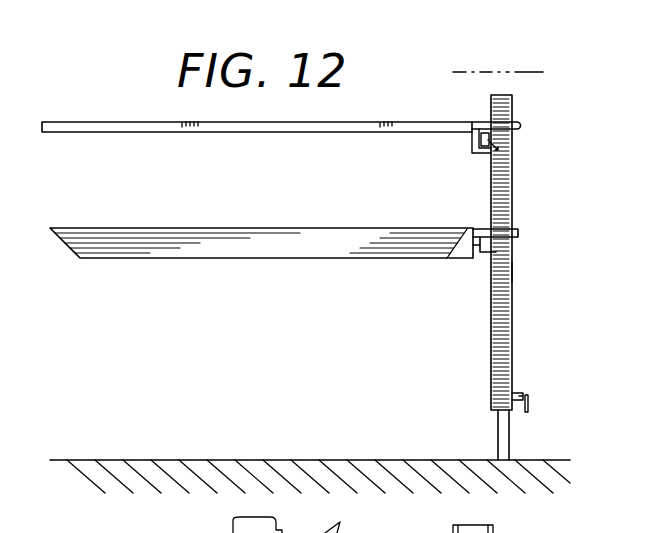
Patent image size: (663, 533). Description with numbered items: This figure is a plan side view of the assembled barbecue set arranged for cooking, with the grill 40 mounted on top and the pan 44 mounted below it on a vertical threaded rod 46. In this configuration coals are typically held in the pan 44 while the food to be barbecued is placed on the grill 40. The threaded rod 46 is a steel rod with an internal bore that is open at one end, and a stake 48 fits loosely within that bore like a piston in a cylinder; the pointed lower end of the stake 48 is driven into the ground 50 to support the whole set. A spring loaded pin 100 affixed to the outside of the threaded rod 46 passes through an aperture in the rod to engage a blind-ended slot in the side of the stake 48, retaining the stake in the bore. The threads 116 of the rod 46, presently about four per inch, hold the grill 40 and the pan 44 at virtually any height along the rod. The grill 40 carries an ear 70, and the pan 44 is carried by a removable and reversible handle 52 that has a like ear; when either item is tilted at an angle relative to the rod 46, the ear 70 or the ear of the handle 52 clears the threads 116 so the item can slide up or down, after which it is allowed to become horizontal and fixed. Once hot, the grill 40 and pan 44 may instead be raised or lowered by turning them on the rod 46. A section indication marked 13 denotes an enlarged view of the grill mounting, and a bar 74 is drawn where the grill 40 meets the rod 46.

The section line 13- 13 is at (540, 62).
The grill 40 is at (88, 122).
The pan 44 is at (106, 226).
The threaded rod 46 is at (491, 330).
The stake 48 is at (497, 437).
The ground 50 is at (511, 462).
The handle 52 is at (517, 229).
The ear 70 is at (478, 156).
The shelf support bar 74 is at (521, 125).
The spring loaded pin 100 is at (519, 397).
The threads 116 is at (512, 272).